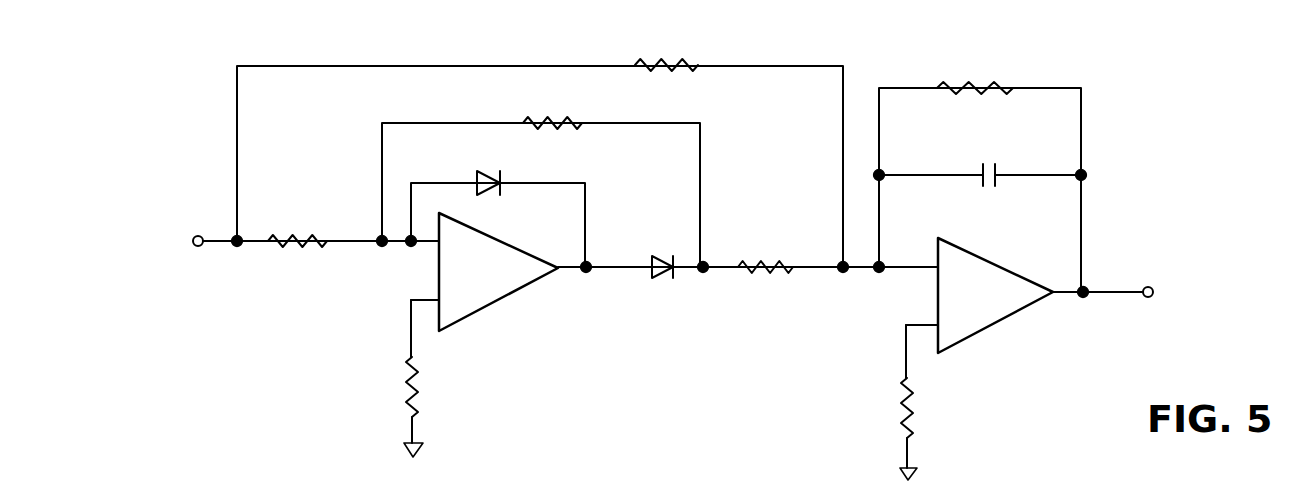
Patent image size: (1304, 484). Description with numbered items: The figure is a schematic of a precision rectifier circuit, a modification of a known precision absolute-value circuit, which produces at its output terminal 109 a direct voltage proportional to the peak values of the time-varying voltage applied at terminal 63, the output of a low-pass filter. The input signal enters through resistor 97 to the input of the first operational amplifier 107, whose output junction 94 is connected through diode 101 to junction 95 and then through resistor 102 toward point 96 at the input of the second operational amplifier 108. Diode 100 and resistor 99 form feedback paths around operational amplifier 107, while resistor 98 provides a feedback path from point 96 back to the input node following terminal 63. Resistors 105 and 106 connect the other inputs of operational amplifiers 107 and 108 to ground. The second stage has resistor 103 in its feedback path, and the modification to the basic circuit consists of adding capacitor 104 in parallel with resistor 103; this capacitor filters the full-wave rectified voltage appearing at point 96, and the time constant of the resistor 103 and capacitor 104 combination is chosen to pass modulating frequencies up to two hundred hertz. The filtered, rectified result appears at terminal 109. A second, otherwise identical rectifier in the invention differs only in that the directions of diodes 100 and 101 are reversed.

The terminal 63 is at (198, 247).
The junction 94 is at (585, 274).
The junction 95 is at (704, 273).
The point 96 is at (879, 273).
The resistor 97 is at (295, 247).
The resistor 98 is at (677, 57).
The resistor 99 is at (558, 118).
The diode 100 is at (488, 170).
The diode 101 is at (658, 274).
The resistor 102 is at (770, 273).
The resistor 103 is at (980, 83).
The capacitor 104 is at (1000, 167).
The resistor 105 is at (408, 387).
The resistor 106 is at (915, 408).
The operational amplifier 107 is at (488, 280).
The operational amplifier 108 is at (989, 304).
The output terminal 109 is at (1150, 286).